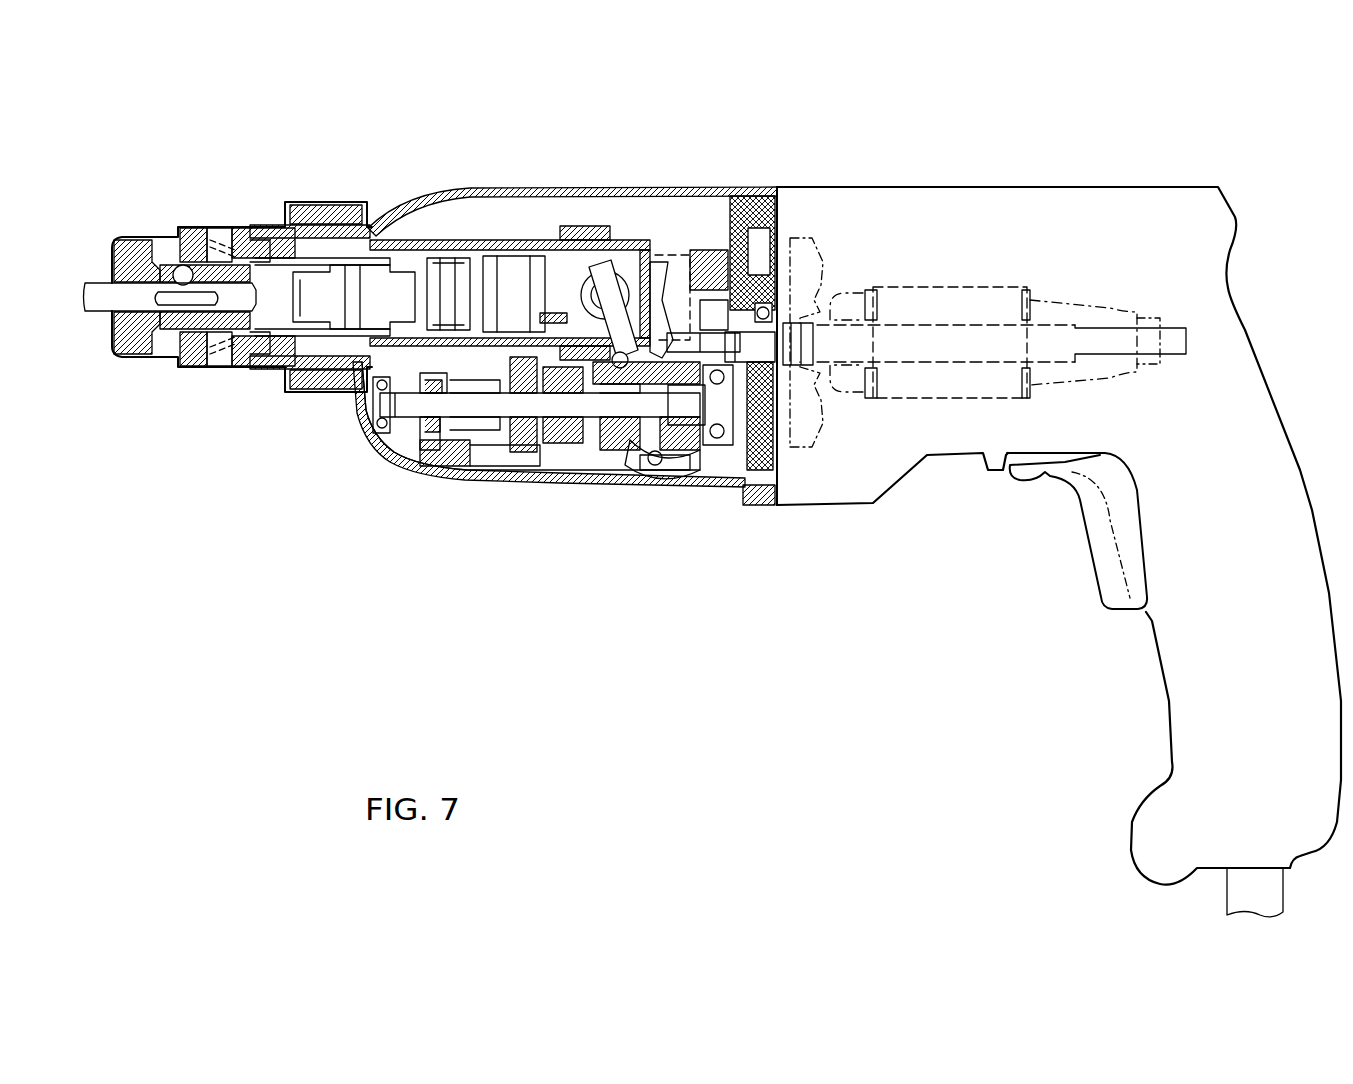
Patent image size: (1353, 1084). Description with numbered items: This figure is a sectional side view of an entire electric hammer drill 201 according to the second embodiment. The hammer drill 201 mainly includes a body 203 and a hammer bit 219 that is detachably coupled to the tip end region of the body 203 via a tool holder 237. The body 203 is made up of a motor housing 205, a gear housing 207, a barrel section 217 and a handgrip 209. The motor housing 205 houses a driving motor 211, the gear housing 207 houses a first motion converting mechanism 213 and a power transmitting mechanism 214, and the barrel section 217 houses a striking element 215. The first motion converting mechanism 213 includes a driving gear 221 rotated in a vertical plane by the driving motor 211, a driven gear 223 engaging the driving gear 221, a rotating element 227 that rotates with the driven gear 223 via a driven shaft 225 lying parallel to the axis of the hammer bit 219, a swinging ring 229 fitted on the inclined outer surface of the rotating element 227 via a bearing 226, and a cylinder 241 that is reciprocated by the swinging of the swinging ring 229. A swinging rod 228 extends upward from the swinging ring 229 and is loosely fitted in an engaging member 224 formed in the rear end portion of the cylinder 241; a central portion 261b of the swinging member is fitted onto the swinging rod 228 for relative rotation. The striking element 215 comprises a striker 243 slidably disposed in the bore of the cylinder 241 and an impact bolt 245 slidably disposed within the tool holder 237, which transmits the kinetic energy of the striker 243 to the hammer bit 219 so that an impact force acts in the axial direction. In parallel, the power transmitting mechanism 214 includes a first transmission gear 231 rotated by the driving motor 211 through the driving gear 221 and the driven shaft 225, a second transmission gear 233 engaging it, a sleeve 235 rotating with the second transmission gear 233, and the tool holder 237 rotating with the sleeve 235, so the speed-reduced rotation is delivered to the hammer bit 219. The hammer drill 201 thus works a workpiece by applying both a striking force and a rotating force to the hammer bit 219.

The electric hammer drill 201 is at (713, 498).
The body 203 is at (768, 182).
The motor housing 205 is at (1052, 184).
The gear housing 207 is at (462, 475).
The handgrip 209 is at (1146, 620).
The driving motor 211 is at (955, 285).
The first motion converting mechanism 213 is at (668, 478).
The power transmitting mechanism 214 is at (455, 450).
The striking element 215 is at (366, 250).
The barrel section 217 is at (275, 224).
The hammer bit 219 is at (97, 332).
The driving gear 221 is at (708, 258).
The driven gear 223 is at (660, 462).
The engaging member 224 is at (542, 275).
The driven shaft 225 is at (572, 445).
The bearing 226 is at (645, 472).
The rotating element 227 is at (606, 455).
The swinging rod 228 is at (602, 268).
The swinging ring 229 is at (648, 355).
The first transmission gear 231 is at (505, 455).
The second transmission gear 233 is at (452, 375).
The sleeve 235 is at (312, 380).
The tool holder 237 is at (228, 352).
The cylinder 241 is at (510, 238).
The striker 243 is at (418, 275).
The impact bolt 245 is at (272, 290).
The central portion of swinging member 261b is at (645, 275).